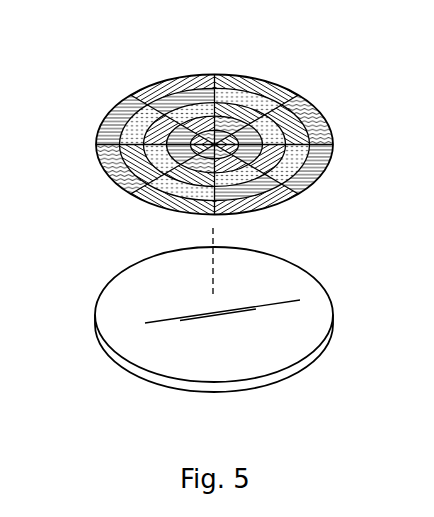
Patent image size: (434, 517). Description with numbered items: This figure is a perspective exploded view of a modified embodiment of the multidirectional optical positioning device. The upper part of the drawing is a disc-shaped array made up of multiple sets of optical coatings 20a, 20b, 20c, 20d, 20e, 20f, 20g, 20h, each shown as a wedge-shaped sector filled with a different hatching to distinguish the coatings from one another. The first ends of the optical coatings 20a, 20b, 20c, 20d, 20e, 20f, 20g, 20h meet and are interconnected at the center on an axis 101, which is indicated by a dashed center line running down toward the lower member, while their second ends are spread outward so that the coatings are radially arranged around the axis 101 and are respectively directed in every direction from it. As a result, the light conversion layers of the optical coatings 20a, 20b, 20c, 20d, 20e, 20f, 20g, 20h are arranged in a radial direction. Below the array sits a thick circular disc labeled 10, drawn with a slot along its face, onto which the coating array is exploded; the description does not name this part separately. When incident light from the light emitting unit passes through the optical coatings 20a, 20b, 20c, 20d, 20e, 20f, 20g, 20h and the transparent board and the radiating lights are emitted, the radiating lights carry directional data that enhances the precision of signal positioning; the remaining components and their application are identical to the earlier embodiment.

The base disc 10 is at (312, 363).
The axis 101 is at (215, 295).
The optical coating 20a is at (278, 205).
The optical coating 20b is at (330, 173).
The optical coating 20c is at (325, 115).
The optical coating 20d is at (257, 78).
The optical coating 20e is at (179, 78).
The optical coating 20f is at (108, 115).
The optical coating 20g is at (103, 165).
The optical coating 20h is at (160, 208).